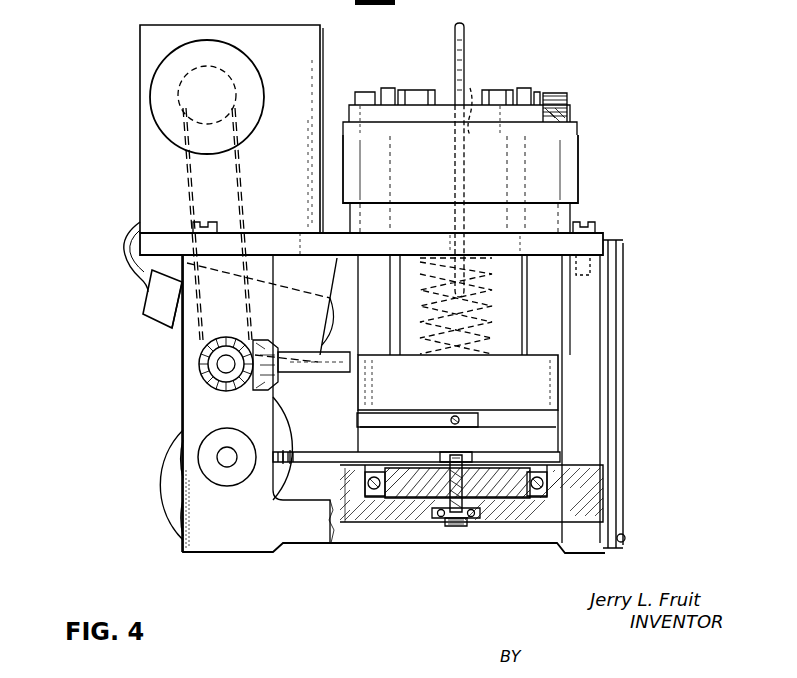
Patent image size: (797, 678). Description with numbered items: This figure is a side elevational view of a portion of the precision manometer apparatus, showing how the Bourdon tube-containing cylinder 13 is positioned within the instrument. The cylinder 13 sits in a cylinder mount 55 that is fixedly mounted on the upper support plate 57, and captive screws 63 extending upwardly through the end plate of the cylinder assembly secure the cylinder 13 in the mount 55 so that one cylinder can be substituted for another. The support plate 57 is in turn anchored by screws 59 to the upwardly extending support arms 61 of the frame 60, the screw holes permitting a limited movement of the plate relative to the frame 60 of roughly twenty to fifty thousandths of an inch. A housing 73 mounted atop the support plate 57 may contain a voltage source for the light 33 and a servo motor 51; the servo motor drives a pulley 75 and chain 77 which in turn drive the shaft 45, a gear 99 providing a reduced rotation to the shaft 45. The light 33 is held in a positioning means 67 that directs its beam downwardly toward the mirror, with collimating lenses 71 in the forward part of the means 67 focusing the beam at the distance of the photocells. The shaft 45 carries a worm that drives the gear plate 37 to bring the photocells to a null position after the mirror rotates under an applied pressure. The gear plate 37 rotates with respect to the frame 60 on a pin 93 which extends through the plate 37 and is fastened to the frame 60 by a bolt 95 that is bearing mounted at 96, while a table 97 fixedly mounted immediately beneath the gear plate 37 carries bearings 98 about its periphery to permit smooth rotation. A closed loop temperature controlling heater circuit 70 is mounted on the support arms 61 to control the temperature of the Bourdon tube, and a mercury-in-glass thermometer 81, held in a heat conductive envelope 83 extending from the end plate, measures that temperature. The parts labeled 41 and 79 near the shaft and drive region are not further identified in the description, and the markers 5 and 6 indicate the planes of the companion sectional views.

The section line 5- 5 is at (35, 45).
The section line 6- 6 is at (362, 352).
The Bourdon tube-containing cylinder 13 is at (510, 300).
The light 33 is at (147, 305).
The gear plate 37 is at (318, 452).
The bearing 41 is at (285, 465).
The shaft 45 is at (226, 464).
The servo motor 51 is at (578, 180).
The cylinder mount 55 is at (572, 128).
The upper support plate 57 is at (605, 237).
The screws 59 is at (205, 222).
The frame 60 is at (310, 535).
The support arms 61 is at (265, 270).
The captive screws 63 is at (555, 95).
The positioning means 67 is at (205, 325).
The temperature controlling circuit 70 is at (620, 385).
The collimating lenses 71 is at (325, 342).
The housing 73 is at (300, 144).
The pulley 75 is at (262, 85).
The chain 77 is at (240, 190).
The driven pulley 79 is at (215, 376).
The thermometer 81 is at (466, 40).
The heat conductive envelope 83 is at (472, 92).
The pin 93 is at (465, 456).
The bolt 95 is at (458, 528).
The bearing 96 is at (440, 520).
The table 97 is at (400, 500).
The bearings 98 is at (548, 482).
The gear 99 is at (160, 478).